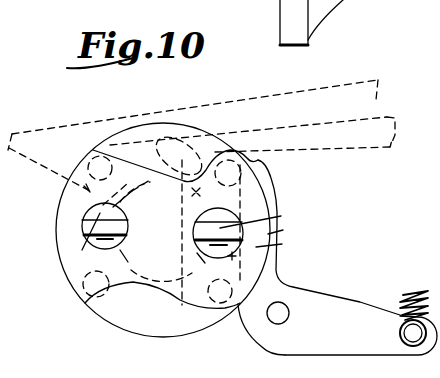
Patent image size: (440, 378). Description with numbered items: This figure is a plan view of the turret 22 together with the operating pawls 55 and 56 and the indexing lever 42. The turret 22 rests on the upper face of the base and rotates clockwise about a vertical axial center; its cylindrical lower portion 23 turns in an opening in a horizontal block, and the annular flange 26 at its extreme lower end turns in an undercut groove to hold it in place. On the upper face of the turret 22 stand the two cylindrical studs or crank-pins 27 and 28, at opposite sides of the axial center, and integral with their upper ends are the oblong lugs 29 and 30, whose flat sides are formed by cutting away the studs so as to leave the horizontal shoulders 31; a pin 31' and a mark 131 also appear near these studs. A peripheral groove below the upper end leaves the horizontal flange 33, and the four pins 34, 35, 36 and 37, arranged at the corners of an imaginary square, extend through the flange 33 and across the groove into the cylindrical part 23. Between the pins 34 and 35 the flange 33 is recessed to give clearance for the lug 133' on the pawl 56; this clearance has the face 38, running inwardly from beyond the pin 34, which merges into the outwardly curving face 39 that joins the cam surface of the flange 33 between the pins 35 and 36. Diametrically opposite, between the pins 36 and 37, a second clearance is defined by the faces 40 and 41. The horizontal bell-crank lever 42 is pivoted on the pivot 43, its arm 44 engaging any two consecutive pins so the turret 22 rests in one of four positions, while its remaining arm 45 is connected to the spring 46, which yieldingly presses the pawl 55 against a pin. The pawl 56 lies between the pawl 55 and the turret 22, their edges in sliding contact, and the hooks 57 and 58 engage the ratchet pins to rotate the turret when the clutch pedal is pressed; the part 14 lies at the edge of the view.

The lug 133' is at (199, 114).
The pawl 55 is at (383, 92).
The pawl 56 is at (391, 133).
The hook 57 is at (52, 173).
The pin 34 is at (92, 152).
The face 38 is at (148, 156).
The face 39 is at (220, 163).
The pin 35 is at (241, 157).
The flange 33 is at (58, 197).
The lug 29 is at (85, 226).
The stud 27 is at (83, 243).
The pin 31' is at (101, 253).
The hook 58 is at (151, 201).
The shoulder 31 is at (200, 233).
The turret 22 is at (162, 229).
The lug 30 is at (261, 216).
The arm 44 is at (286, 229).
The stud 28 is at (282, 244).
The pin 131 is at (247, 222).
The pin 36 is at (232, 291).
The pin 37 is at (84, 302).
The face 40 is at (162, 298).
The face 41 is at (161, 300).
The cylindrical lower portion 23 is at (181, 245).
The annular flange 26 is at (175, 336).
The bell-crank lever 42 is at (256, 335).
The arm 45 is at (361, 334).
The pivot 43 is at (278, 313).
The spring 46 is at (403, 296).
The frame 14 is at (420, 295).